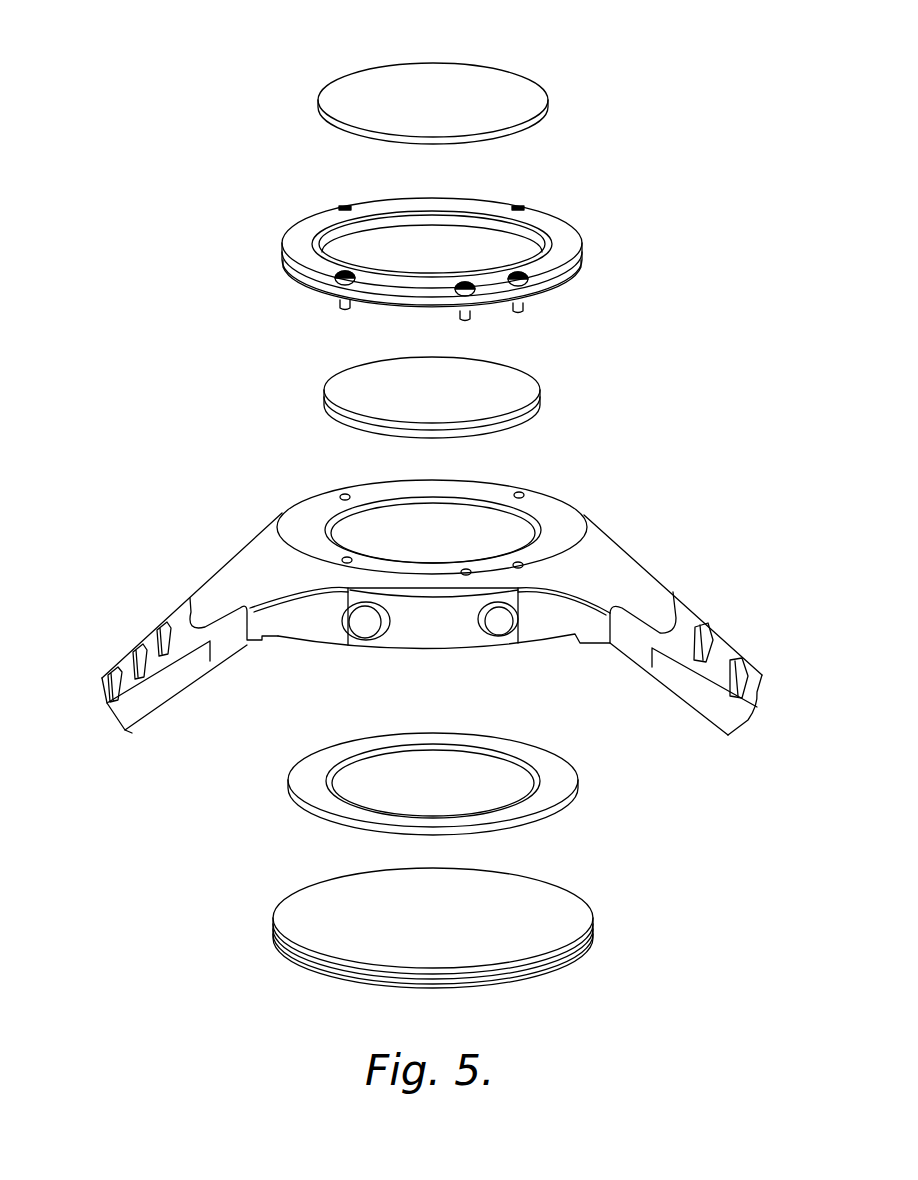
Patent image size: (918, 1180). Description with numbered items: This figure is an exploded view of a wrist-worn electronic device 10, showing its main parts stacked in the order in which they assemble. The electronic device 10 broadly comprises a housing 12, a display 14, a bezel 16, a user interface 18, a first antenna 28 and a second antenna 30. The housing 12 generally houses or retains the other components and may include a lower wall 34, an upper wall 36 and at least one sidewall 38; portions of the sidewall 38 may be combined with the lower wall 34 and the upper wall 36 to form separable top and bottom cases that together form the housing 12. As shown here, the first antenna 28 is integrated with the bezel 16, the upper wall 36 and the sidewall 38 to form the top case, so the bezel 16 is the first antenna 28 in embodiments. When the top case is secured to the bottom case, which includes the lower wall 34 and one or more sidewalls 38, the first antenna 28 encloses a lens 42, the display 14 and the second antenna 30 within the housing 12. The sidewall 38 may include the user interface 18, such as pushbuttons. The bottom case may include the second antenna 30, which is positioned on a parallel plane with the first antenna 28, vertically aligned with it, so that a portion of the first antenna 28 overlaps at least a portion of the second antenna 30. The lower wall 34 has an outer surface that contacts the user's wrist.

The electronic device 10 is at (552, 62).
The housing 12 is at (85, 112).
The display 14 is at (341, 388).
The bezel 16 is at (552, 200).
The user interface 18 is at (514, 656).
The first antenna 28 is at (432, 259).
The second antenna 30 is at (303, 785).
The lower wall 34 is at (293, 922).
The upper wall 36 is at (563, 518).
The sidewall 38 is at (417, 637).
The lens 42 is at (353, 102).